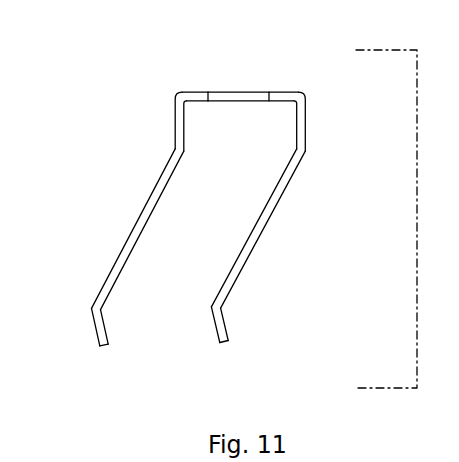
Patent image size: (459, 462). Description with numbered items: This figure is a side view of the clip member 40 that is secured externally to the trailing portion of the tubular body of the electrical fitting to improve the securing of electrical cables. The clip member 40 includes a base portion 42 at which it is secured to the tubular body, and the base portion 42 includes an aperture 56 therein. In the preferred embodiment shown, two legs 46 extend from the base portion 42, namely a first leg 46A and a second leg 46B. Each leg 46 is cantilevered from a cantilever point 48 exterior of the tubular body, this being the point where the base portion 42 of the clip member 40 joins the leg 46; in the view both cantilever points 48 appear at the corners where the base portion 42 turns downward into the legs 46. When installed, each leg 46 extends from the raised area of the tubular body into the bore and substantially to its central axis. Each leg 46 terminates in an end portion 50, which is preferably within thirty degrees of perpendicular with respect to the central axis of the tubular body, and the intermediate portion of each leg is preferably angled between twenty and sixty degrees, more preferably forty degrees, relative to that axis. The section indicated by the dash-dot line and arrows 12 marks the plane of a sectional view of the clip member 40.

The clip member 40 is at (118, 76).
The base portion 42 is at (196, 93).
The aperture 56 is at (245, 97).
The cantilever point 48 is at (179, 92).
The leg 46 is at (142, 240).
The first leg 46A is at (260, 233).
The second leg 46B is at (125, 243).
The end portion 50 is at (224, 324).
The section line 12- 12 is at (327, 50).